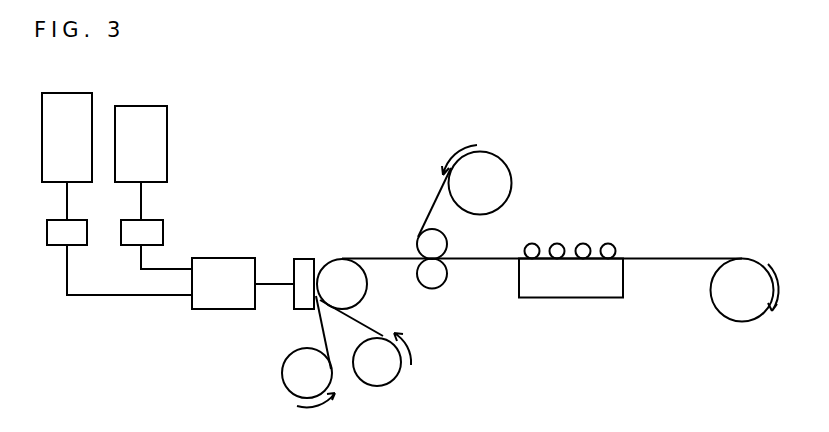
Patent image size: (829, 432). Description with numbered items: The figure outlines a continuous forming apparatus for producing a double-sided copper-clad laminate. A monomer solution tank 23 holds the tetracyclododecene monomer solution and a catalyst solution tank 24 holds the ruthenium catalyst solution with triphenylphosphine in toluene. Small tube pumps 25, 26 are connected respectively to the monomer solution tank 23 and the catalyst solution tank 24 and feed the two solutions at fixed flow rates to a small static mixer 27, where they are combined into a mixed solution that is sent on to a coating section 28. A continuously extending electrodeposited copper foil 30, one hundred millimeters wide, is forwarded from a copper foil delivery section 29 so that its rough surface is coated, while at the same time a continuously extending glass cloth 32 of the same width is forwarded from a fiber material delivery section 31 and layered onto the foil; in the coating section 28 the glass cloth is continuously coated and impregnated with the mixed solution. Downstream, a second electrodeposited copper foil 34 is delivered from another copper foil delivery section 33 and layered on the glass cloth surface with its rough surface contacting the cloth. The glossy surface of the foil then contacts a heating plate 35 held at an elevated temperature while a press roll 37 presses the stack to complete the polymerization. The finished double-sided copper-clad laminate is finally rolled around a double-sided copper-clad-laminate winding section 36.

The monomer solution tank 23 is at (63, 92).
The catalyst solution tank 24 is at (138, 105).
The small tube pump 25 is at (78, 220).
The small tube pump 26 is at (153, 220).
The small static mixer 27 is at (219, 258).
The coating section 28 is at (302, 259).
The copper foil delivery section 29 is at (385, 372).
The electrodeposited copper foil 30 is at (368, 325).
The fiber material delivery section 31 is at (292, 378).
The glass cloth 32 is at (318, 322).
The copper foil delivery section 33 is at (512, 182).
The electrodeposited copper foil 34 is at (430, 210).
The heating plate 35 is at (570, 298).
The double-sided copper-clad-laminate winding section 36 is at (744, 310).
The press roll 37 is at (608, 243).